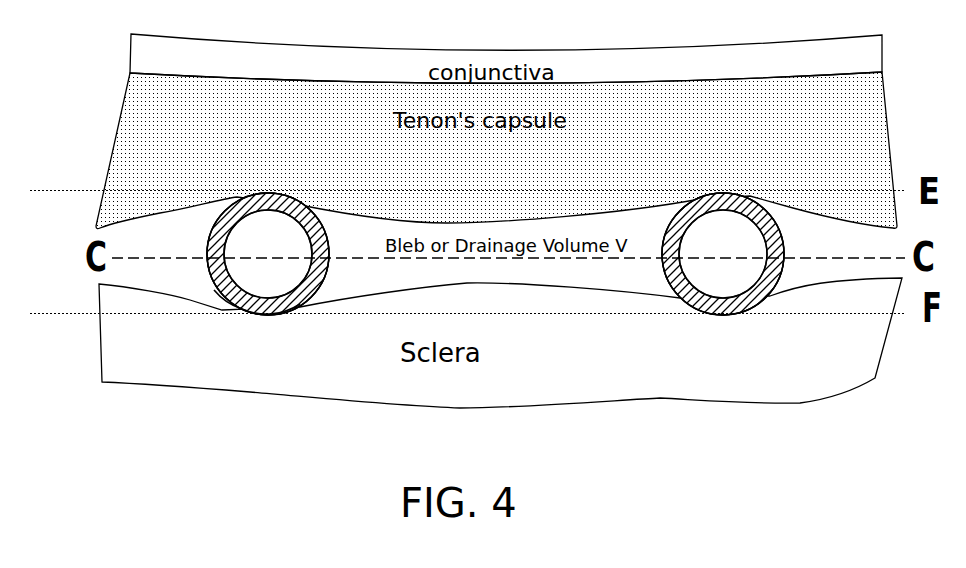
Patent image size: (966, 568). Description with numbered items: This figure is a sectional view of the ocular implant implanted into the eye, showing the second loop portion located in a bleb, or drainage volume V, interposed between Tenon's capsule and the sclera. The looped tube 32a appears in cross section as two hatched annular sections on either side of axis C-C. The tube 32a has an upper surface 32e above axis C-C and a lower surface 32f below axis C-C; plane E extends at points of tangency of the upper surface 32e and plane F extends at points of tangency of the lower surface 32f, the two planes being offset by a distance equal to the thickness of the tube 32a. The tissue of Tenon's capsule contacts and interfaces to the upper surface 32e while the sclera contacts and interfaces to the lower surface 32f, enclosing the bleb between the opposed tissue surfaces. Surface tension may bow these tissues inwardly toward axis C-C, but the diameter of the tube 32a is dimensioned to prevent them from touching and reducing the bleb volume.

The upper surface 32e is at (268, 193).
The tube 32a is at (223, 302).
The lower surface 32f is at (260, 307).